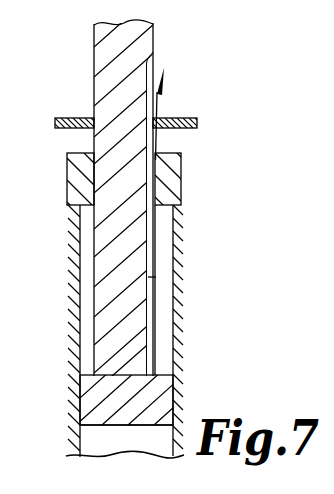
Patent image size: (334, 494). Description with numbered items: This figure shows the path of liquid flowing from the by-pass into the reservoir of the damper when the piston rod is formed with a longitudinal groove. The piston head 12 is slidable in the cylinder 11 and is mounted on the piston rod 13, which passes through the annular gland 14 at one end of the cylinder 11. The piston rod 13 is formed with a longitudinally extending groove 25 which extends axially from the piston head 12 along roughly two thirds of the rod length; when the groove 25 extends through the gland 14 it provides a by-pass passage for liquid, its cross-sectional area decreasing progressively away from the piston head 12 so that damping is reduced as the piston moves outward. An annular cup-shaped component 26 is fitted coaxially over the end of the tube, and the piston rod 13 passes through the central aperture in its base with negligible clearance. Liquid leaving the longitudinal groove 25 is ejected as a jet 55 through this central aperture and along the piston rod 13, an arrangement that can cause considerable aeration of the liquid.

The cylinder 11 is at (177, 343).
The piston head 12 is at (90, 397).
The piston rod 13 is at (110, 108).
The annular gland 14 is at (174, 183).
The longitudinally extending groove 25 is at (150, 277).
The annular cup-shaped component 26 is at (196, 126).
The jet 55 is at (158, 105).